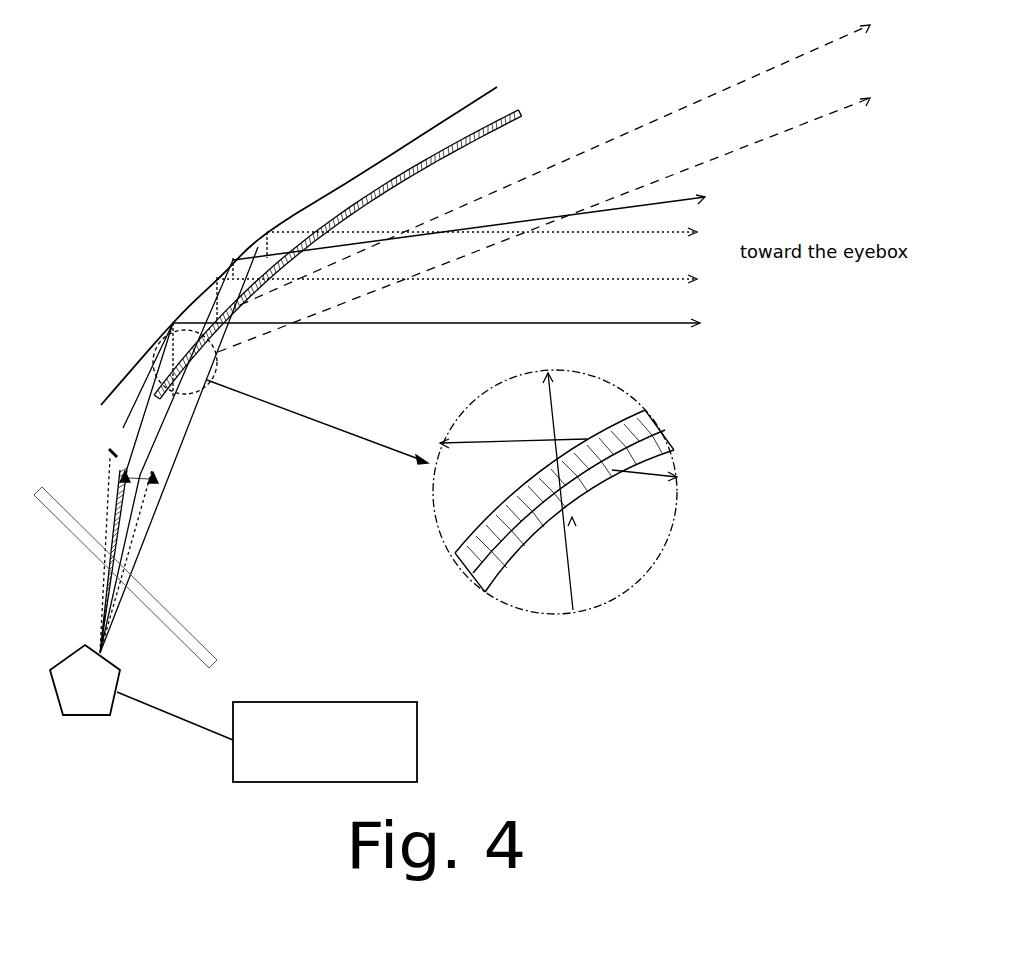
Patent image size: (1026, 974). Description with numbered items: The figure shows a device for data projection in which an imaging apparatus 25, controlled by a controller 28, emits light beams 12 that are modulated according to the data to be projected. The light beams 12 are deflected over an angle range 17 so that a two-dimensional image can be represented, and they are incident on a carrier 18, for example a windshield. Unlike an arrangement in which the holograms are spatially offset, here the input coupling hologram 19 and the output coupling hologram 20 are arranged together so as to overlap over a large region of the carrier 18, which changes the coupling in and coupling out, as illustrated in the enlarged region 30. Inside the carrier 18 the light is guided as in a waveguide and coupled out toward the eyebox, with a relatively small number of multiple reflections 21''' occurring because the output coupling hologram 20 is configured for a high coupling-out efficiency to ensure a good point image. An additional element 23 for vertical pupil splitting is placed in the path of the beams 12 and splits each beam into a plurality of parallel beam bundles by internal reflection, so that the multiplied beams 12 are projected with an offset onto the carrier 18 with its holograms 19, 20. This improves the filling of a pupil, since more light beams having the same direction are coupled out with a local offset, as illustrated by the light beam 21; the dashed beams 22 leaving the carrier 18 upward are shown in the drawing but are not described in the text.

The light beams 12 is at (189, 424).
The angle range 17 is at (113, 453).
The carrier 18 is at (112, 384).
The input coupling hologram 19 is at (446, 150).
The output coupling hologram 20 is at (415, 158).
The light beam 21 is at (467, 261).
The multiple reflections 21''' is at (504, 239).
The transmitted light rays 22 is at (700, 99).
The element for vertical pupil splitting 23 is at (174, 621).
The imaging apparatus 25 is at (108, 700).
The controller 28 is at (300, 698).
The enlarged region 30 is at (672, 525).